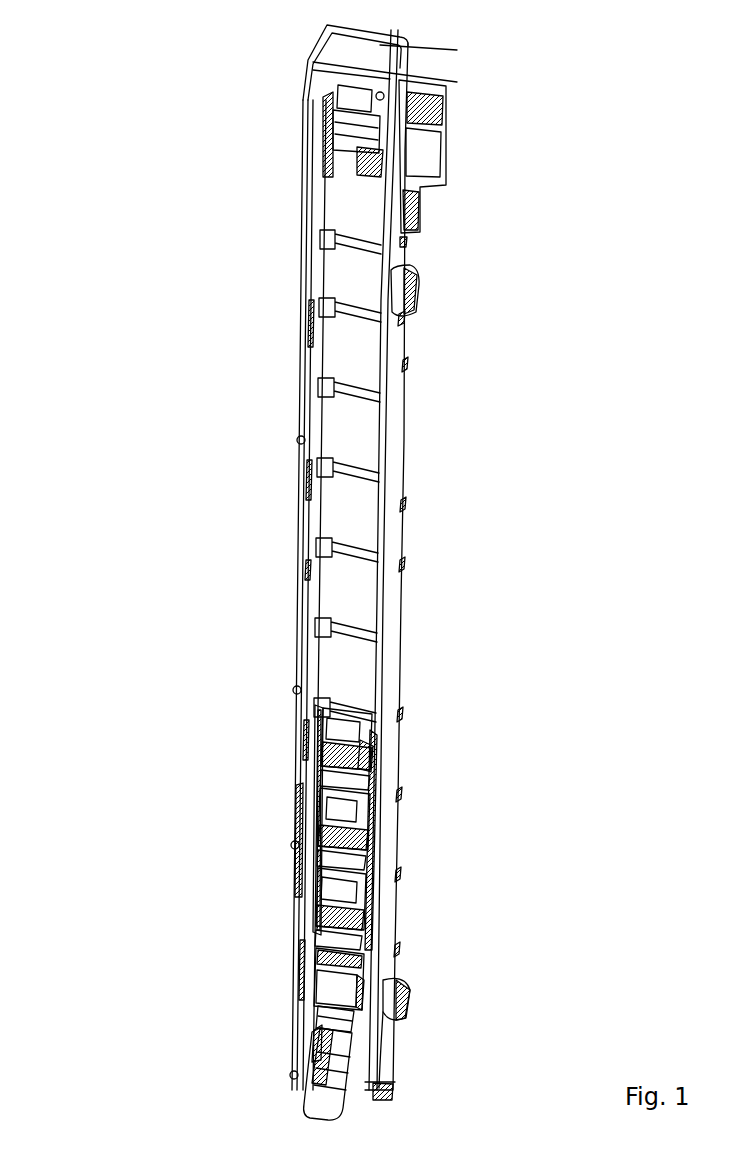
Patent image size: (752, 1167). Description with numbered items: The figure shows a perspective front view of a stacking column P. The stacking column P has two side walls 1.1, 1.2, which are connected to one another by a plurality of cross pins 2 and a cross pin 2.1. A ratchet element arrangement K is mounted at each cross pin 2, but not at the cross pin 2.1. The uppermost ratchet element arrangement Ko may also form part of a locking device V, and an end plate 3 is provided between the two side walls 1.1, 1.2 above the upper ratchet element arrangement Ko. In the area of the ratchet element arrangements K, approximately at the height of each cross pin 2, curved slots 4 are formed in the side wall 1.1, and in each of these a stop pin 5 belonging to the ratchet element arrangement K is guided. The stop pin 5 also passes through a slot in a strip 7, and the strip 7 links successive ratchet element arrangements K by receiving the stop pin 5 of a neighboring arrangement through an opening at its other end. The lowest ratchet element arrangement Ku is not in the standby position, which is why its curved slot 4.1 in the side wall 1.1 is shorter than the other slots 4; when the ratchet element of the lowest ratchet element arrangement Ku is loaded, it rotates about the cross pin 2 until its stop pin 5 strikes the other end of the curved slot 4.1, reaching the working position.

The side wall 1.1 is at (296, 525).
The side wall 1.2 is at (404, 441).
The cross pin 2 is at (362, 627).
The cross pin 2.1 is at (388, 1086).
The end plate 3 is at (380, 50).
The curved slot 4 is at (300, 722).
The curved slot 4.1 is at (310, 1043).
The stop pin 5 is at (302, 787).
The strip 7 is at (312, 999).
The uppermost ratchet element arrangement Ko is at (335, 125).
The ratchet element arrangement K is at (373, 772).
The lowest ratchet element arrangement Ku is at (272, 1088).
The stacking column P is at (227, 225).
The locking device V is at (522, 176).